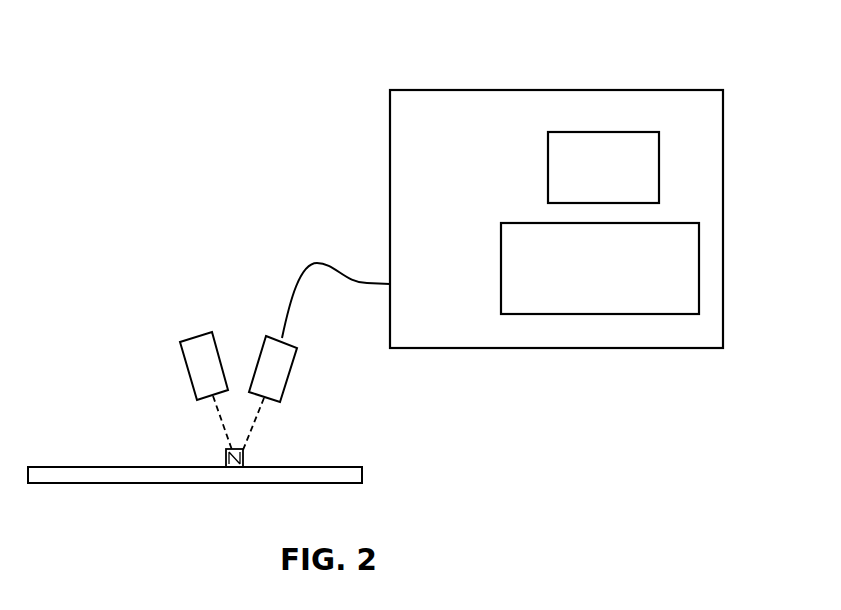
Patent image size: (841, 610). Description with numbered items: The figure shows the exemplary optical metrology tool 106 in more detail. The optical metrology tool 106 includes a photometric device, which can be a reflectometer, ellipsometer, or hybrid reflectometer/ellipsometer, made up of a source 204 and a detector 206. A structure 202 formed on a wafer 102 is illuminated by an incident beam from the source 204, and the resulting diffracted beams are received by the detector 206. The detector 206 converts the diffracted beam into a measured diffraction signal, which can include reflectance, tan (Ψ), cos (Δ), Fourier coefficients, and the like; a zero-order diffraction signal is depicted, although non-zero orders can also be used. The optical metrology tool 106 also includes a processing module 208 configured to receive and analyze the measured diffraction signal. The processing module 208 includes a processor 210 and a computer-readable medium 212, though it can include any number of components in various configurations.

The wafer 102 is at (113, 466).
The optical metrology tool 106 is at (126, 173).
The structure 202 is at (245, 460).
The source 204 is at (193, 337).
The detector 206 is at (283, 378).
The processing module 208 is at (457, 143).
The processor 210 is at (620, 165).
The computer-readable medium 212 is at (617, 255).